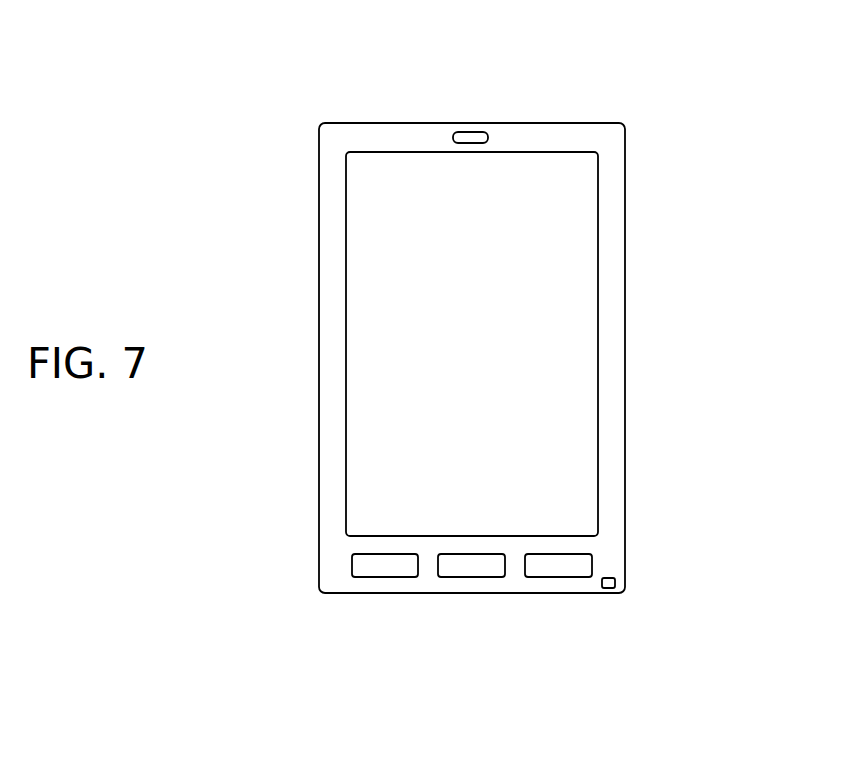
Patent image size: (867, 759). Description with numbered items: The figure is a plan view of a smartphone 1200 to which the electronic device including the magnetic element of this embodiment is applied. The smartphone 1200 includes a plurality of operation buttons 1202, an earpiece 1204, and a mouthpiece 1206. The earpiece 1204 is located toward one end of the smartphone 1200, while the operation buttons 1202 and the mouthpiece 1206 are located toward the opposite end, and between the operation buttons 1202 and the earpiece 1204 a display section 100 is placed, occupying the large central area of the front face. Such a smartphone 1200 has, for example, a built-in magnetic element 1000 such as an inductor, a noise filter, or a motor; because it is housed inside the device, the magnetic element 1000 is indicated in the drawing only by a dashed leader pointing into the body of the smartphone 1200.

The smartphone 1200 is at (640, 118).
The magnetic element 1000 is at (610, 402).
The display section 100 is at (358, 236).
The earpiece 1204 is at (477, 138).
The operation buttons 1202 is at (570, 568).
The mouthpiece 1206 is at (607, 588).